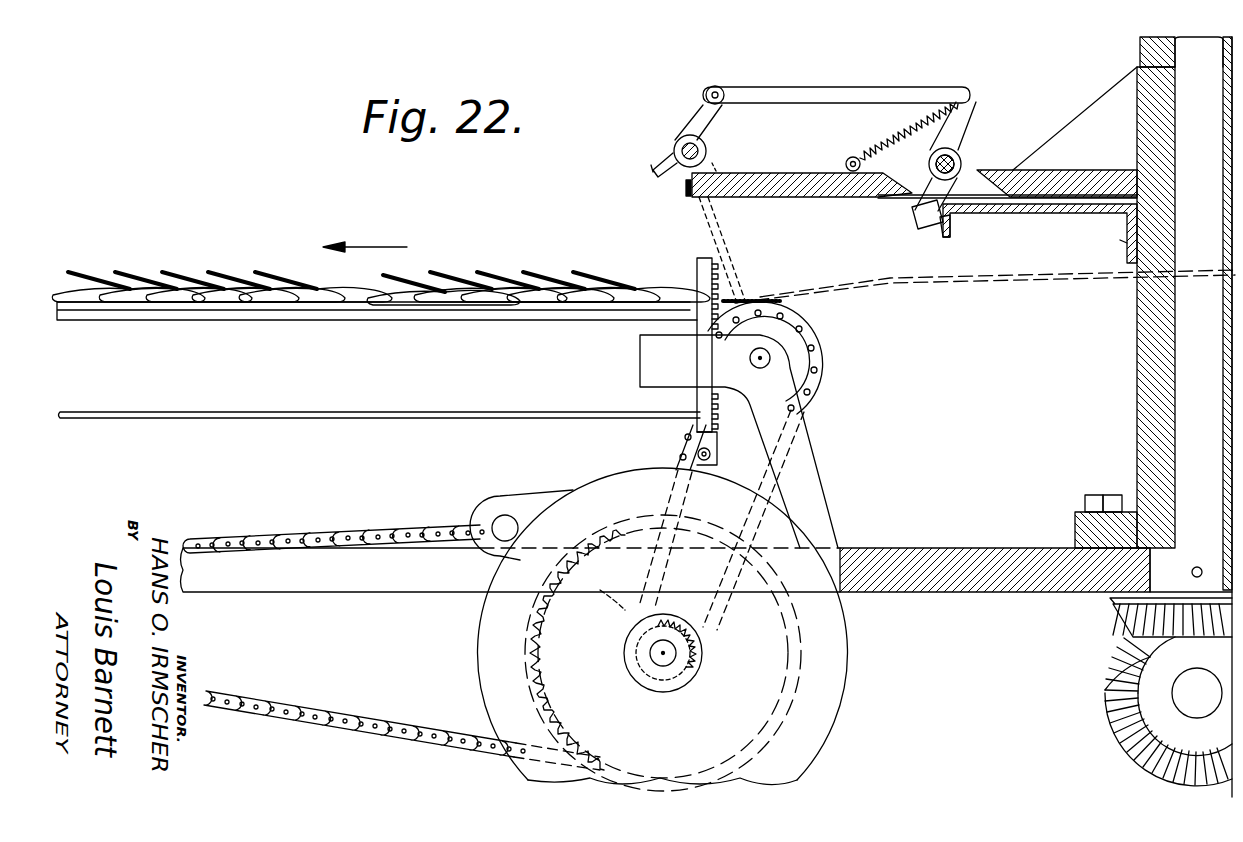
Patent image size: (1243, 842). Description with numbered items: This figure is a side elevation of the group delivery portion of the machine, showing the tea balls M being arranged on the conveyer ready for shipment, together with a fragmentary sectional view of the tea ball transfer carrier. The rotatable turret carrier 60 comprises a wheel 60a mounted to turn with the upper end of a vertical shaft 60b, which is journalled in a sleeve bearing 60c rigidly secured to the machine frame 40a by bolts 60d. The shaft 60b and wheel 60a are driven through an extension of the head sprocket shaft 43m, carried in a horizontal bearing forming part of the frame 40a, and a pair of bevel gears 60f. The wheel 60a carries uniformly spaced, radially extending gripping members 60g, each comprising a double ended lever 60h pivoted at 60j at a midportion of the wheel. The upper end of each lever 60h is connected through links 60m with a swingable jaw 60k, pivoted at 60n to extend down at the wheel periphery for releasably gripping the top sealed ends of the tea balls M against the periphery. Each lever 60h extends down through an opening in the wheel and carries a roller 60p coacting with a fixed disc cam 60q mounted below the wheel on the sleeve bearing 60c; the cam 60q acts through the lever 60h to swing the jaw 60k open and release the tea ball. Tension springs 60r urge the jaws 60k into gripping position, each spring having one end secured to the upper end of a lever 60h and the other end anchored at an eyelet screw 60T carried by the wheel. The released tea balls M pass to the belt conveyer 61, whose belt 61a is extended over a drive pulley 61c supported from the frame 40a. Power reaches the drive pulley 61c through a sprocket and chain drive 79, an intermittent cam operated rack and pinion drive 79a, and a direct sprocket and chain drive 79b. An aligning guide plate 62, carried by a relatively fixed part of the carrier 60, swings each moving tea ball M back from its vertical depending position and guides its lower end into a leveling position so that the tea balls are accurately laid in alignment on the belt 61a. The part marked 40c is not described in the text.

The rotatable turret carrier 60 is at (1090, 72).
The wheel 60a is at (1018, 170).
The vertical shaft 60b is at (1195, 323).
The sleeve bearing 60c is at (1145, 400).
The bolts 60d is at (1097, 503).
The bevel gears 60f is at (1125, 670).
The gripping members 60g is at (806, 84).
The double ended lever 60h is at (961, 130).
The pivot 60j is at (962, 165).
The swingable jaw 60k is at (668, 157).
The links 60m is at (775, 82).
The jaw pivot 60n is at (706, 150).
The roller 60p is at (925, 215).
The fixed disc cam 60q is at (998, 214).
The tension springs 60r is at (896, 148).
The eyelet screw 60T is at (848, 150).
The machine frame 40a is at (957, 548).
The mounting bar 40c is at (684, 190).
The head sprocket shaft 43m is at (1197, 693).
The belt conveyer 61 is at (443, 336).
The belt 61a is at (370, 306).
The drive pulley 61c is at (823, 354).
The aligning guide plate 62 is at (760, 301).
The sprocket and chain drive 79 is at (480, 568).
The intermittent cam operated rack and pinion drive 79a is at (693, 414).
The direct sprocket and chain drive 79b is at (815, 378).
The tea balls M is at (405, 288).